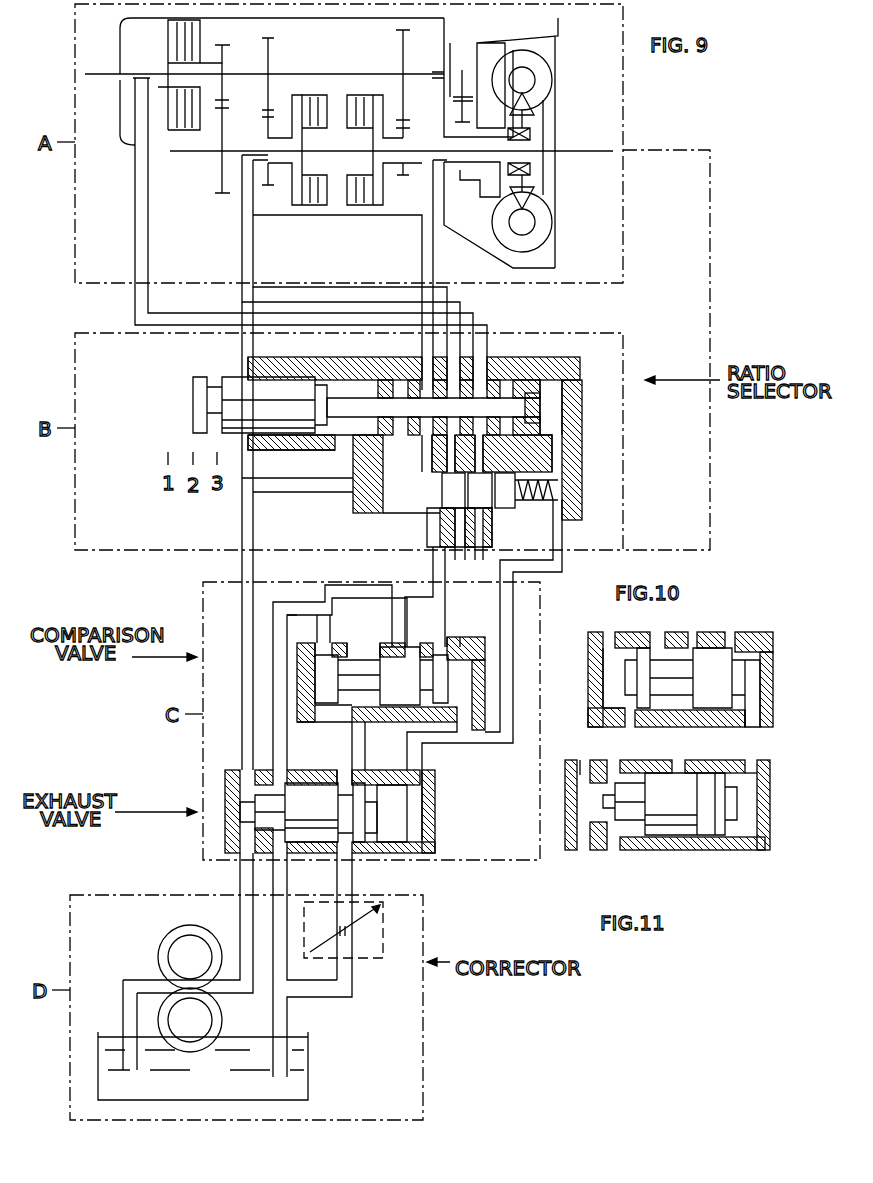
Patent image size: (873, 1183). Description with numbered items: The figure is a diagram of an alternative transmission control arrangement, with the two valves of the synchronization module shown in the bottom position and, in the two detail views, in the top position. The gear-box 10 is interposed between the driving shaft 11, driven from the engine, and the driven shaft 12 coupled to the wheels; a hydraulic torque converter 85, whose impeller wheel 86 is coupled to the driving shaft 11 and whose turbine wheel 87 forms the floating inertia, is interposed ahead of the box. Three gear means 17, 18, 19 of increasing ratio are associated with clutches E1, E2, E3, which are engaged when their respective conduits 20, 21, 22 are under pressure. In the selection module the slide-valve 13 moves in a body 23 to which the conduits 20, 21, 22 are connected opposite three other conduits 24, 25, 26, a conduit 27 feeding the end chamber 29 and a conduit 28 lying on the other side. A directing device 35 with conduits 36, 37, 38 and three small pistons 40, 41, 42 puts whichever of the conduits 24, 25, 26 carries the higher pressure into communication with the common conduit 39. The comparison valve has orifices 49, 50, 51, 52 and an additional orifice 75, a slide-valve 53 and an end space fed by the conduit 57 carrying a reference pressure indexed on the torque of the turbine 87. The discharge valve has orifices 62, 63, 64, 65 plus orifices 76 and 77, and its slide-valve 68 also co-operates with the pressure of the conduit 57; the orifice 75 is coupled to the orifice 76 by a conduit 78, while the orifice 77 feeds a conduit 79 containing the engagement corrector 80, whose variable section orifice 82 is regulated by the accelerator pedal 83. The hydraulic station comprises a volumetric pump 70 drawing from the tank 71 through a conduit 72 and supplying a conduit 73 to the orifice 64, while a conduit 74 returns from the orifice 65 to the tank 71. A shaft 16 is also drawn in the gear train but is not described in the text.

In FIG. 9, the gear-box 10 is at (120, 55).
In FIG. 9, the driving shaft 11 is at (597, 152).
In FIG. 9, the driven shaft 12 is at (105, 82).
In FIG. 9, the slide-valve 13 is at (240, 378).
In FIG. 9, the intermediate shaft 16 is at (460, 70).
In FIG. 9, the gear means 17 is at (410, 125).
In FIG. 9, the gear means 18 is at (262, 120).
In FIG. 9, the gear means 19 is at (226, 112).
In FIG. 9, the conduit 20 is at (425, 268).
In FIG. 9, the conduit 21 is at (455, 305).
In FIG. 9, the conduit 22 is at (482, 348).
In FIG. 9, the body 23 is at (572, 365).
In FIG. 9, the conduit 24 is at (422, 455).
In FIG. 9, the conduit 25 is at (447, 460).
In FIG. 9, the conduit 26 is at (475, 468).
In FIG. 9, the conduit 27 is at (556, 447).
In FIG. 9, the conduit 28 is at (340, 468).
In FIG. 9, the chamber 29 is at (560, 412).
In FIG. 9, the directing device 35 is at (400, 525).
In FIG. 9, the conduit 36 is at (458, 540).
In FIG. 9, the conduit 37 is at (480, 540).
In FIG. 9, the conduit 38 is at (488, 528).
In FIG. 9, the common conduit 39 is at (433, 572).
In FIG. 9, the small piston 40 is at (456, 490).
In FIG. 9, the small piston 41 is at (482, 490).
In FIG. 9, the small piston 42 is at (526, 490).
In FIG. 9, the orifice 49 is at (322, 648).
In FIG. 10, the orifice 49 is at (606, 640).
In FIG. 9, the orifice 50 is at (366, 650).
In FIG. 10, the orifice 50 is at (656, 640).
In FIG. 9, the orifice 51 is at (405, 648).
In FIG. 10, the orifice 51 is at (693, 640).
In FIG. 9, the orifice 52 is at (450, 648).
In FIG. 10, the orifice 52 is at (731, 640).
In FIG. 9, the slide-valve 53 is at (381, 676).
In FIG. 10, the slide-valve 53 is at (692, 687).
In FIG. 9, the conduit 57 is at (495, 745).
In FIG. 9, the orifice 62 is at (243, 775).
In FIG. 10, the orifice 62 is at (577, 750).
In FIG. 9, the orifice 63 is at (280, 775).
In FIG. 10, the orifice 63 is at (615, 728).
In FIG. 9, the orifice 64 is at (240, 860).
In FIG. 11, the orifice 64 is at (577, 875).
In FIG. 9, the orifice 65 is at (282, 860).
In FIG. 11, the orifice 65 is at (618, 850).
In FIG. 9, the slide-valve 68 is at (308, 812).
In FIG. 11, the slide-valve 68 is at (670, 804).
In FIG. 9, the volumetric pump 70 is at (160, 942).
In FIG. 9, the tank 71 is at (310, 1070).
In FIG. 9, the conduit 72 is at (123, 1000).
In FIG. 9, the conduit 73 is at (240, 915).
In FIG. 9, the conduit 74 is at (282, 1015).
In FIG. 9, the orifice 75 is at (345, 715).
In FIG. 10, the orifice 75 is at (625, 707).
In FIG. 9, the orifice 76 is at (345, 778).
In FIG. 10, the orifice 76 is at (683, 728).
In FIG. 9, the orifice 77 is at (347, 858).
In FIG. 11, the orifice 77 is at (678, 850).
In FIG. 9, the conduit 78 is at (340, 728).
In FIG. 9, the conduit 79 is at (360, 990).
In FIG. 9, the engagement corrector 80 is at (372, 958).
In FIG. 9, the variable section orifice 82 is at (355, 938).
In FIG. 9, the accelerator pedal 83 is at (380, 924).
In FIG. 9, the hydraulic torque converter 85 is at (552, 82).
In FIG. 9, the impeller wheel 86 is at (497, 60).
In FIG. 9, the turbine wheel 87 is at (548, 70).
In FIG. 9, the clutch E1 is at (368, 205).
In FIG. 9, the clutch E2 is at (310, 205).
In FIG. 9, the clutch E3 is at (200, 32).